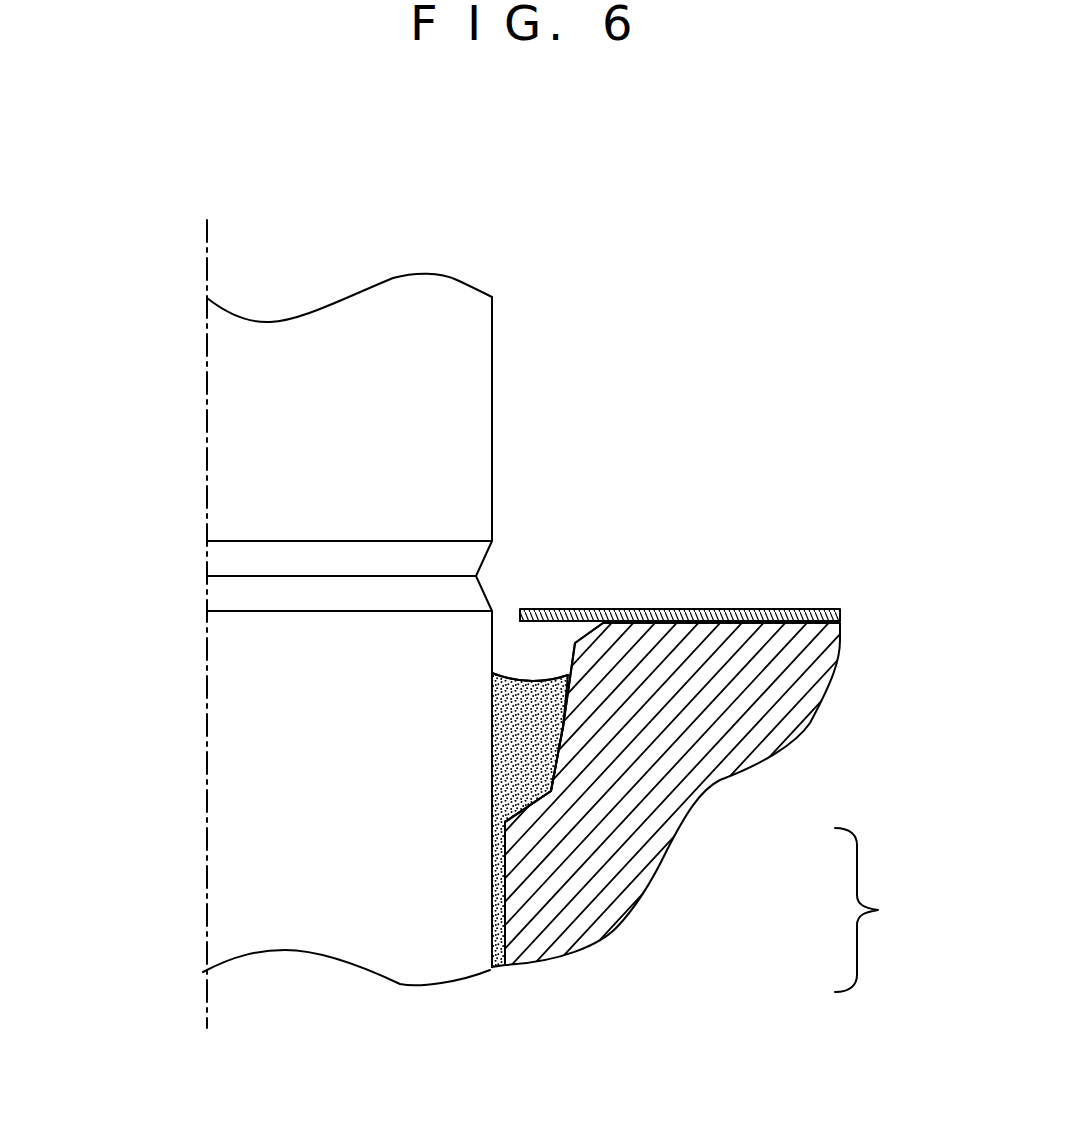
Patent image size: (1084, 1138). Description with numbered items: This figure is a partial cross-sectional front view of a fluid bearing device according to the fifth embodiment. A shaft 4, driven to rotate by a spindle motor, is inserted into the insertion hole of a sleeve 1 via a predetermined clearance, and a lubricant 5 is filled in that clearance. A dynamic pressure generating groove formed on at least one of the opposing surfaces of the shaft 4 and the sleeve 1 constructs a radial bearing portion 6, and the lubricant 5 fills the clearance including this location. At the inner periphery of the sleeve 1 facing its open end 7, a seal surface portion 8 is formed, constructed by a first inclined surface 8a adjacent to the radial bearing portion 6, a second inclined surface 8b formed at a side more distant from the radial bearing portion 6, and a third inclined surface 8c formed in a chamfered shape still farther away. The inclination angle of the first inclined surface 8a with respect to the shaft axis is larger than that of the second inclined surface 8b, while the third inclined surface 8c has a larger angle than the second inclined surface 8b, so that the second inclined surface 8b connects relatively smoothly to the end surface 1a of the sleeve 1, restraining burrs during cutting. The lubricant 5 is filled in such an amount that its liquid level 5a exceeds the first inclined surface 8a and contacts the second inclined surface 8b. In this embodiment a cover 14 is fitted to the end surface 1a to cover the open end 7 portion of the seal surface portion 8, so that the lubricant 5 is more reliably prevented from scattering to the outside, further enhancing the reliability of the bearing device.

The sleeve 1 is at (783, 673).
The end surface 1a is at (780, 608).
The shaft 4 is at (367, 340).
The lubricant 5 is at (517, 757).
The liquid level 5a is at (505, 673).
The radial bearing portion 6 is at (490, 918).
The open end 7 is at (533, 655).
The seal surface portion 8 is at (870, 910).
The first inclined surface 8a is at (523, 810).
The second inclined surface 8b is at (562, 730).
The third inclined surface 8c is at (593, 628).
The cover 14 is at (673, 608).